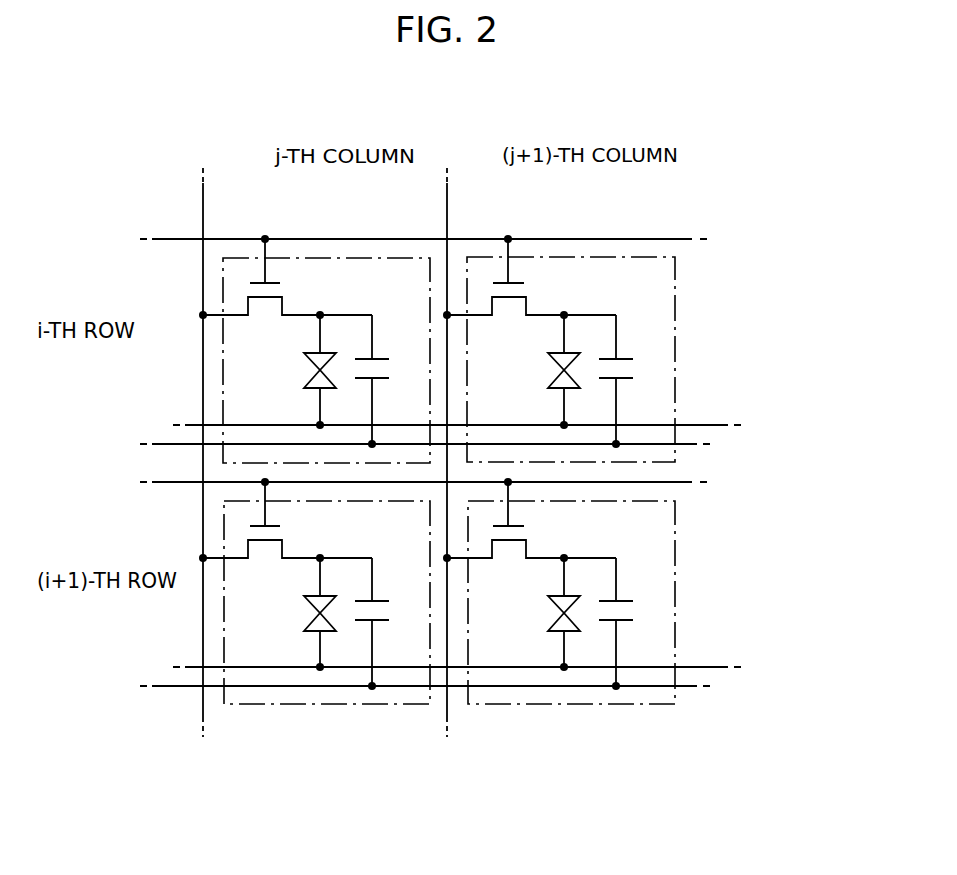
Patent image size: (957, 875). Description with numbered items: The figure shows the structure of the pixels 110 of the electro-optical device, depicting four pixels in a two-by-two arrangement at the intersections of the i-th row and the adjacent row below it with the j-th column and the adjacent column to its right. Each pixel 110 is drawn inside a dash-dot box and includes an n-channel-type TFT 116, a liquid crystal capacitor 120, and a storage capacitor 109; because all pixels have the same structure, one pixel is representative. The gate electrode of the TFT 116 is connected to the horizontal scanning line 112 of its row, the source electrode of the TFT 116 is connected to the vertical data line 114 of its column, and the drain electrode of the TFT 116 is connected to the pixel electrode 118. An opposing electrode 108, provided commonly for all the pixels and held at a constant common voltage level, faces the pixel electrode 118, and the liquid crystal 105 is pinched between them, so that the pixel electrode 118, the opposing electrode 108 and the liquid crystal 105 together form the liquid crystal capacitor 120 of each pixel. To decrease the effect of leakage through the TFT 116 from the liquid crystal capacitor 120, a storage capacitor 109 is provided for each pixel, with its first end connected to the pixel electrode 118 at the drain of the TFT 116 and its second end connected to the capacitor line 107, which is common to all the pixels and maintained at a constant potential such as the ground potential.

The liquid crystal 105 is at (404, 491).
The capacitor line 107 is at (168, 445).
The opposing electrode 108 is at (713, 423).
The storage capacitor 109 is at (392, 369).
The pixel 110 is at (382, 258).
The scanning line 112 is at (183, 241).
The data line 114 is at (203, 218).
The TFT 116 is at (282, 299).
The pixel electrode 118 is at (307, 353).
The liquid crystal capacitor 120 is at (556, 366).